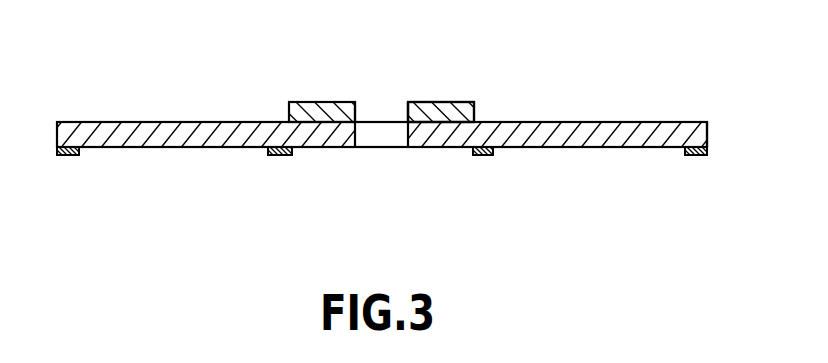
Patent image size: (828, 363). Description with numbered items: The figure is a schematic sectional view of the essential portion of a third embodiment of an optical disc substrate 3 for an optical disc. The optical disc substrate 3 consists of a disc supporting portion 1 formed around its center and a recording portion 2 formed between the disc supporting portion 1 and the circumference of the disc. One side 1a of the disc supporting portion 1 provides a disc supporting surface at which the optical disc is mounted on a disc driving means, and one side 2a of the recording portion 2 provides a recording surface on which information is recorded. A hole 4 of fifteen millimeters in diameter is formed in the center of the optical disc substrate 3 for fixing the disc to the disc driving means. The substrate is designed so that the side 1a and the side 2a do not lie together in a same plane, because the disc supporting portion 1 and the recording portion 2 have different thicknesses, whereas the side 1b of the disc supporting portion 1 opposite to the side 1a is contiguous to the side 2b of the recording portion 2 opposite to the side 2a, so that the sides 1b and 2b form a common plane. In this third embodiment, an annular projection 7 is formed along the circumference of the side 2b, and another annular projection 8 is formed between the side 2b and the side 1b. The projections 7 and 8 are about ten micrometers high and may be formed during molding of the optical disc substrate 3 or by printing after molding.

The disc supporting portion 1 is at (417, 143).
The side of disc supporting portion 1a is at (435, 102).
The side of disc supporting portion opposite to side 1a 1b is at (448, 147).
The recording portion 2 is at (568, 140).
The side of recording portion 2a is at (655, 122).
The side of recording portion opposite to side 2a 2b is at (623, 147).
The optical disc substrate 3 is at (709, 130).
The hole 4 is at (363, 102).
The annular projection 7 is at (67, 155).
The annular projection 8 is at (275, 155).